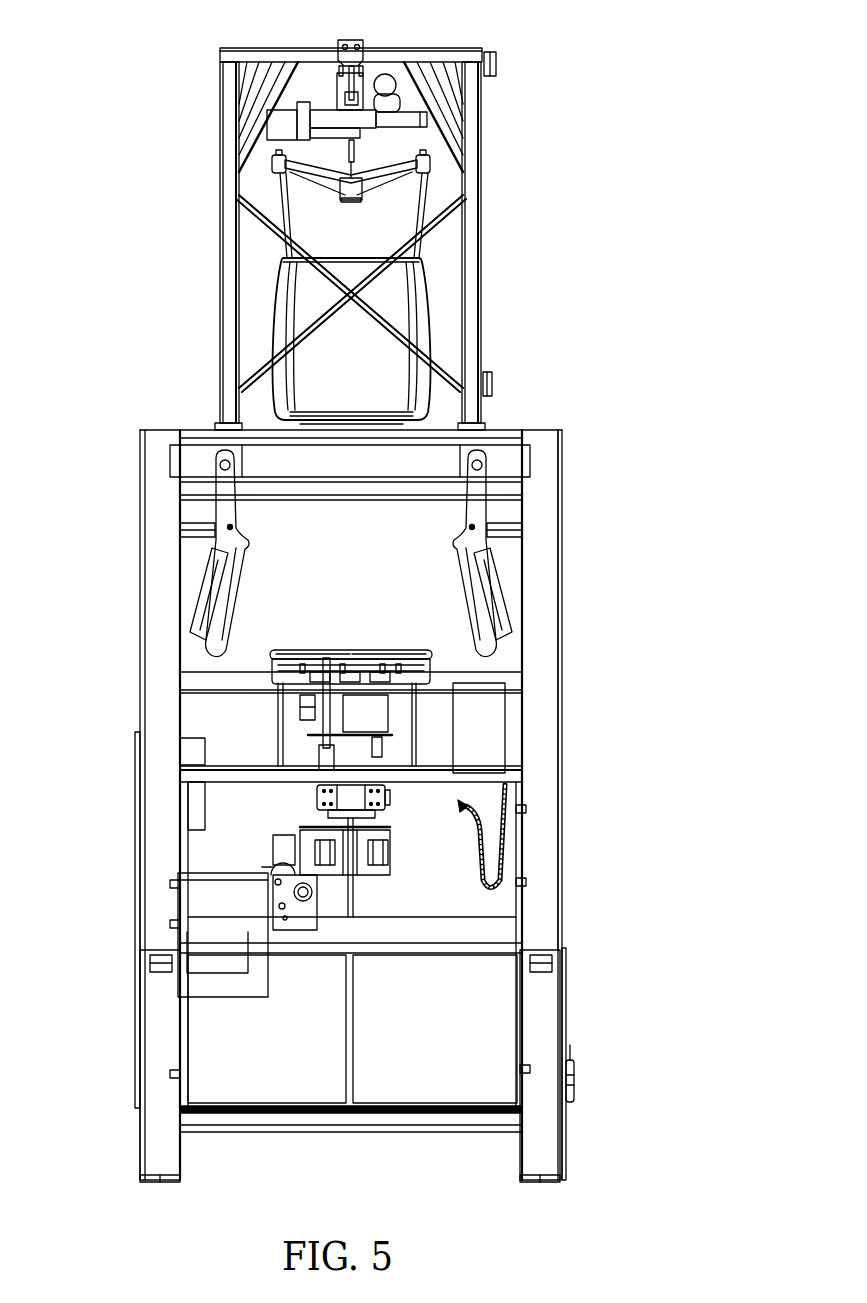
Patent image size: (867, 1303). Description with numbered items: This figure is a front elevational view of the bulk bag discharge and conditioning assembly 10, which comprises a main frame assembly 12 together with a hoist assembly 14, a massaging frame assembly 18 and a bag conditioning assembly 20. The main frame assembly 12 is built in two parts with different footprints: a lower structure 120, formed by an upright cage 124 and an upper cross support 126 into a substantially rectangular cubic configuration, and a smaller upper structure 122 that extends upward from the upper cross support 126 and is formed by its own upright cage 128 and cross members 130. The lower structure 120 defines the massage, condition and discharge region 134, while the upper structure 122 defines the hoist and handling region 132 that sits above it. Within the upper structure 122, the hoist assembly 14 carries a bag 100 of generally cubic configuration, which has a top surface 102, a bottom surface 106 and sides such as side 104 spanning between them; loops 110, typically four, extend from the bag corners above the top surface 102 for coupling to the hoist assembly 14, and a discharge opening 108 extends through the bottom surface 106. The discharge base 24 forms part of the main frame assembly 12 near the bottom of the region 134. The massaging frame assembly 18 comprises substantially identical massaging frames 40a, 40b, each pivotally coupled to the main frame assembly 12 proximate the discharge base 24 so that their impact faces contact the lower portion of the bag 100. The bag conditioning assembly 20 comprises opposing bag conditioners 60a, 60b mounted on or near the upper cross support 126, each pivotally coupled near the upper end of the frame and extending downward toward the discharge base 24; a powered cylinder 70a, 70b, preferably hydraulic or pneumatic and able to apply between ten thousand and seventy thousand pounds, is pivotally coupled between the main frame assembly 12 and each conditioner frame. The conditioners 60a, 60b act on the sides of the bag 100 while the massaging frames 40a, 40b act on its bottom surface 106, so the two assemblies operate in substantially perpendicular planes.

The bulk bag discharge and conditioning assembly 10 is at (700, 612).
The main frame assembly 12 is at (578, 700).
The hoist assembly 14 is at (280, 117).
The massaging frame assembly 18 is at (240, 660).
The bag conditioning assembly 20 is at (180, 603).
The discharge base 24 is at (453, 672).
The massaging frame 40a is at (302, 650).
The massaging frame 40b is at (393, 650).
The opposing bag conditioner 60a is at (227, 550).
The opposing bag conditioner 60b is at (478, 550).
The powered cylinder 70a is at (217, 521).
The powered cylinder 70b is at (507, 508).
The bag 100 is at (272, 337).
The top surface 102 is at (353, 258).
The side 104 is at (397, 373).
The bottom surface 106 is at (398, 424).
The discharge opening 108 is at (338, 440).
The loops 110 is at (430, 173).
The lower structure 120 is at (575, 666).
The upper structure 122 is at (495, 307).
The upright cage 124 is at (546, 800).
The upper cross support 126 is at (387, 480).
The upright cage 128 is at (483, 344).
The cross members 130 is at (390, 48).
The hoist and handling region 132 is at (450, 263).
The massage, condition and discharge region 134 is at (445, 600).